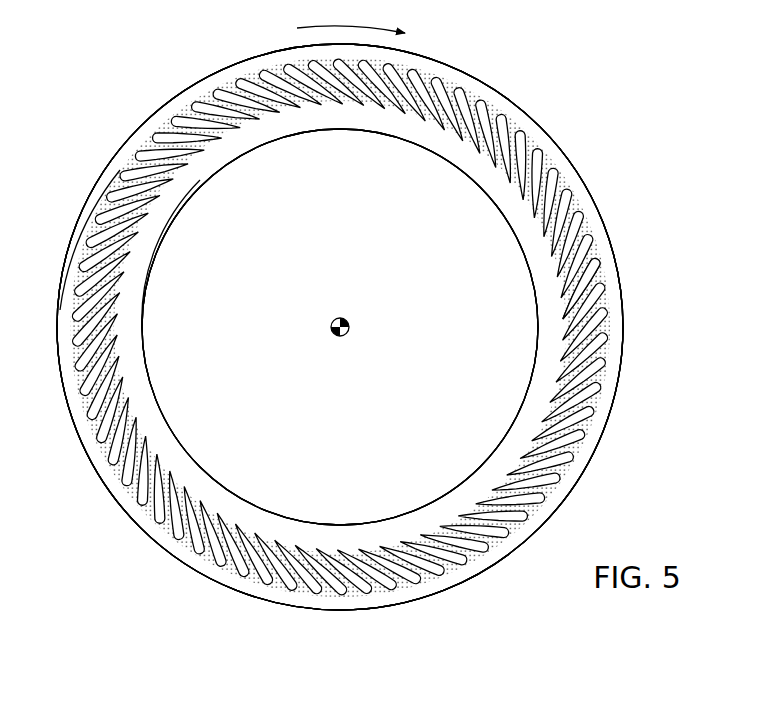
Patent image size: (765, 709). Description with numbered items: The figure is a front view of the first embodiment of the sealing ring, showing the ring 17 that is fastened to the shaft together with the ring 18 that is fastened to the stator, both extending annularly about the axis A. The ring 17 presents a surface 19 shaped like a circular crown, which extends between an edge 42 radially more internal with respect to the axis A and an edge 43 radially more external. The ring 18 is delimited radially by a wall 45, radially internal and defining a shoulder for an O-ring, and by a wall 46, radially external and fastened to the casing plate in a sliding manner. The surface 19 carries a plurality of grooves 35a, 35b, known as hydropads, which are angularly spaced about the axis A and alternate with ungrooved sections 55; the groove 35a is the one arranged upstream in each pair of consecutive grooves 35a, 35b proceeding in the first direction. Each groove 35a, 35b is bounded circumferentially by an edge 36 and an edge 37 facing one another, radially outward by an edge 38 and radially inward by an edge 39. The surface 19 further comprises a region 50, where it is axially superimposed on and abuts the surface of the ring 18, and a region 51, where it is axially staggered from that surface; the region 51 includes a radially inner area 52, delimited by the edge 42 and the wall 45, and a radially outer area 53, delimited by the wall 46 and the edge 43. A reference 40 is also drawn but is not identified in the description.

The axis A is at (333, 336).
The ring 17 is at (607, 177).
The ring 18 is at (526, 138).
The surface 19 is at (338, 120).
The groove 35a is at (187, 113).
The groove 35b is at (213, 102).
The edge 36 is at (588, 265).
The edge 37 is at (600, 340).
The edge 38 is at (137, 158).
The edge 39 is at (172, 185).
The outer circumferential surface 40 is at (605, 403).
The edge 42 is at (382, 142).
The edge 43 is at (490, 84).
The wall 45 is at (560, 307).
The wall 46 is at (592, 228).
The region 50 is at (565, 212).
The region 51 is at (560, 90).
The radially inner area 52 is at (445, 143).
The radially outer area 53 is at (518, 110).
The ungrooved section 55 is at (397, 578).